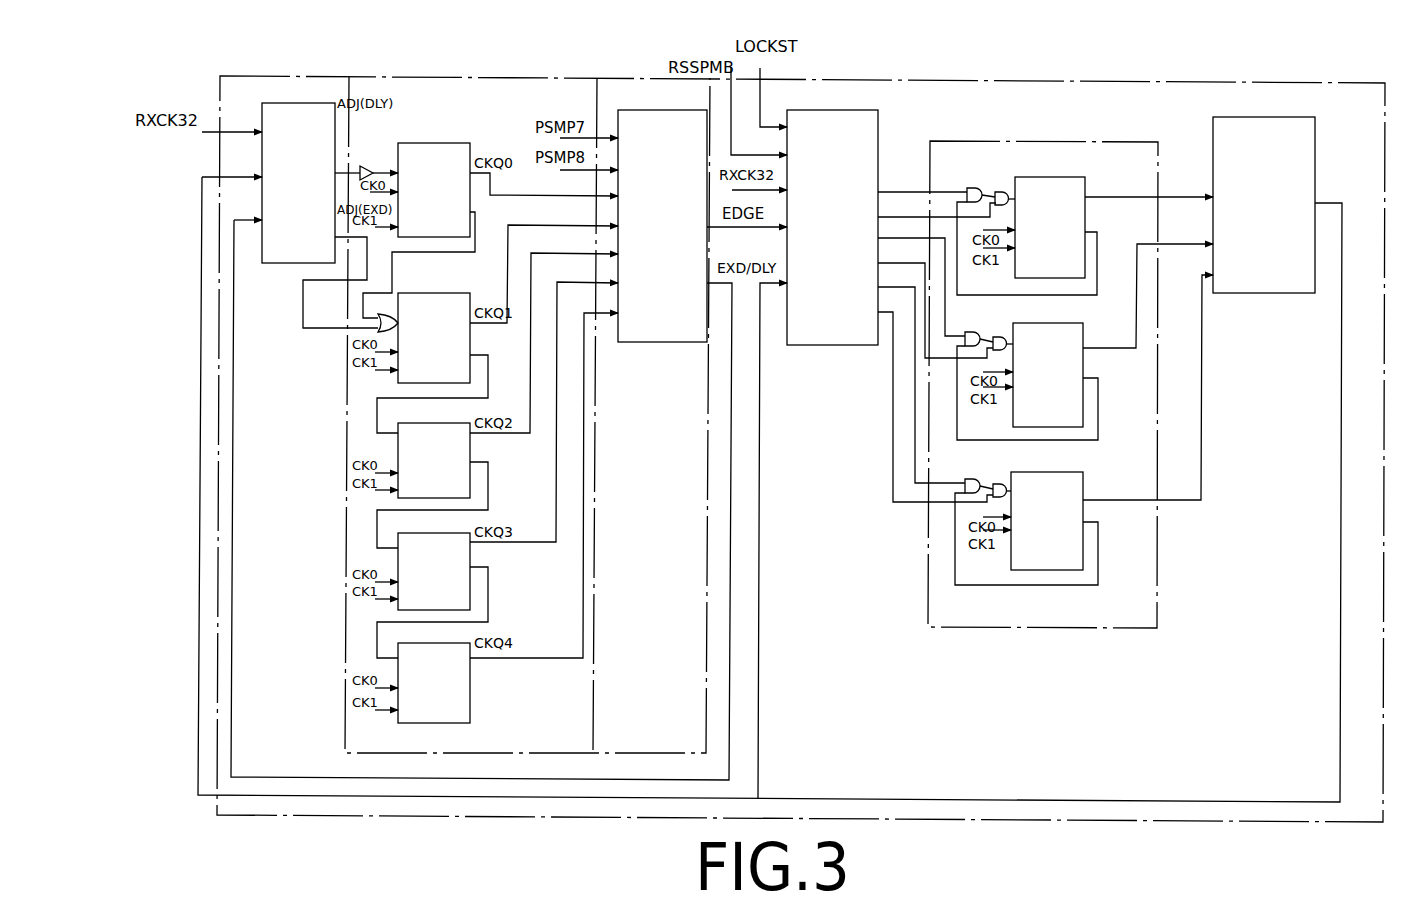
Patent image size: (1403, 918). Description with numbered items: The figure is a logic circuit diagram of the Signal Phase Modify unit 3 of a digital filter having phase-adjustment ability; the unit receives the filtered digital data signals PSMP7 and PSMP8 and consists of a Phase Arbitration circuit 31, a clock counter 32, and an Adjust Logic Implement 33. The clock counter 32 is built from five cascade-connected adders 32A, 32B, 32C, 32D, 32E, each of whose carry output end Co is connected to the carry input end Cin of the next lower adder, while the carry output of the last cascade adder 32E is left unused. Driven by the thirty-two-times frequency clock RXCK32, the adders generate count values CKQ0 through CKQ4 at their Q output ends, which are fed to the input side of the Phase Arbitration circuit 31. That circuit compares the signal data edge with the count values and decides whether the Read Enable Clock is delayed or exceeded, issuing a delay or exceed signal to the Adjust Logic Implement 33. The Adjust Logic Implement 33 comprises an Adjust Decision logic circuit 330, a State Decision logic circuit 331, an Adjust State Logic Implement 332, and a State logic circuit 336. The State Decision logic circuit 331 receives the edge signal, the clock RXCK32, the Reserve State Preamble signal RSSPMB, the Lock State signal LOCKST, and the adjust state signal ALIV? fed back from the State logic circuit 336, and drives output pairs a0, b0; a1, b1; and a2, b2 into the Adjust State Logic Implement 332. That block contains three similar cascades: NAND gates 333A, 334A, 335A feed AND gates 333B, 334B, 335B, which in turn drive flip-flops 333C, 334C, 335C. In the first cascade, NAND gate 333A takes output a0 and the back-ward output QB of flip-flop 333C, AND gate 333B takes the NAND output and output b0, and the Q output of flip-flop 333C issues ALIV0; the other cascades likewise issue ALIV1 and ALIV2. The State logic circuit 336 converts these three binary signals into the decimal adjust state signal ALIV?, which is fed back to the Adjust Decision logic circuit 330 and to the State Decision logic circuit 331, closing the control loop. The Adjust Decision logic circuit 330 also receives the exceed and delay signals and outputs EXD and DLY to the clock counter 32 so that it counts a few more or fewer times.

The Signal Phase Modify unit 3 is at (843, 80).
The Phase Arbitration circuit 31 is at (643, 122).
The clock counter 32 is at (521, 92).
The first-cascade adder 32A is at (415, 147).
The adder 32B is at (465, 335).
The adder 32C is at (407, 448).
The adder 32D is at (407, 557).
The last cascade adder 32E is at (407, 667).
The Adjust Logic Implement 33 is at (905, 92).
The Adjust Decision logic circuit 330 is at (287, 252).
The State Decision logic circuit 331 is at (838, 340).
The Adjust State Logic Implement 332 is at (1128, 620).
The first-cascade NAND gate 333A is at (973, 187).
The first-cascade AND gate 333B is at (1001, 192).
The first-cascade flip-flop 333C is at (1072, 182).
The second-cascade NAND gate 334A is at (966, 339).
The second-cascade AND gate 334B is at (992, 346).
The second-cascade flip-flop 334C is at (1077, 408).
The third-cascade NAND gate 335A is at (962, 488).
The third-cascade AND gate 335B is at (990, 493).
The third-cascade flip-flop 335C is at (1073, 545).
The State logic circuit 336 is at (1278, 283).